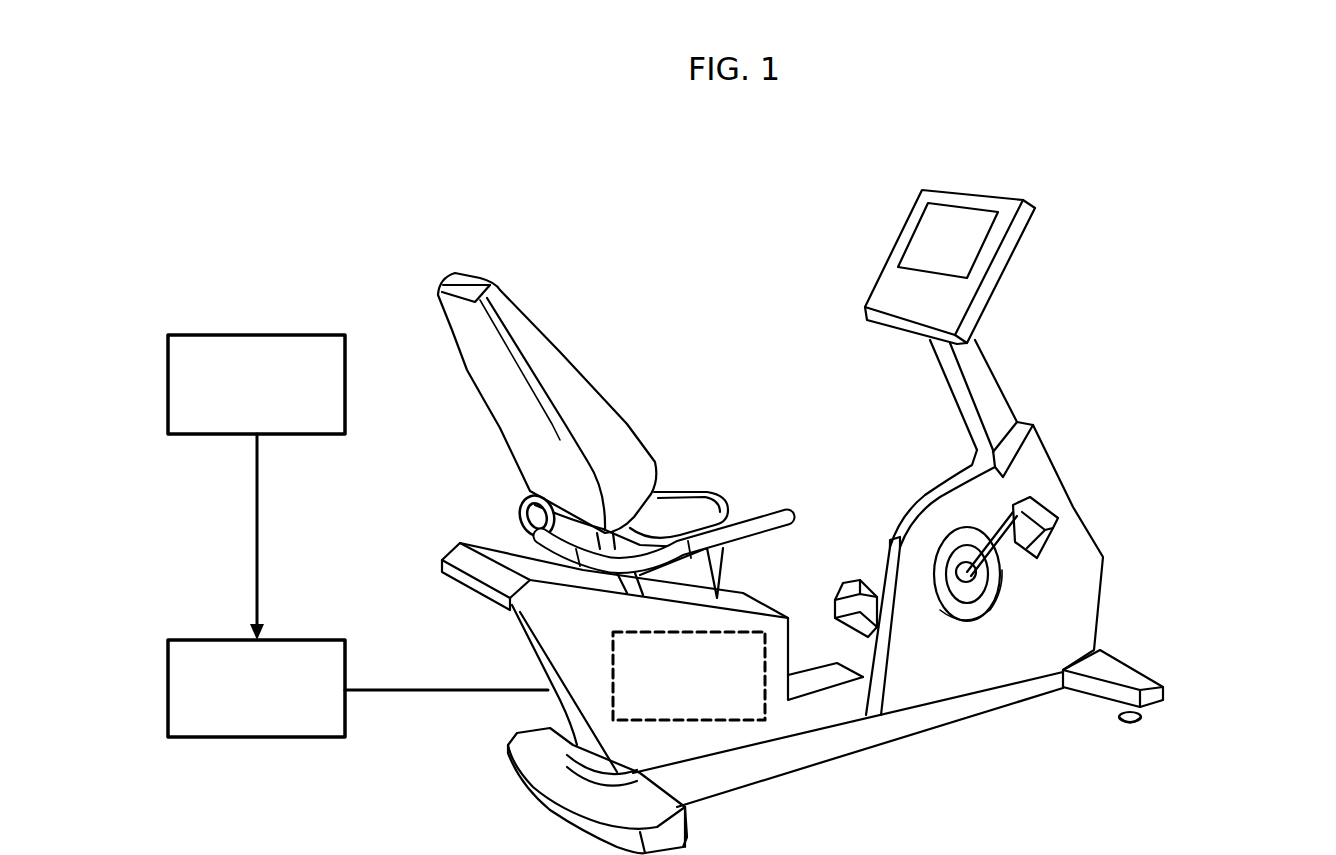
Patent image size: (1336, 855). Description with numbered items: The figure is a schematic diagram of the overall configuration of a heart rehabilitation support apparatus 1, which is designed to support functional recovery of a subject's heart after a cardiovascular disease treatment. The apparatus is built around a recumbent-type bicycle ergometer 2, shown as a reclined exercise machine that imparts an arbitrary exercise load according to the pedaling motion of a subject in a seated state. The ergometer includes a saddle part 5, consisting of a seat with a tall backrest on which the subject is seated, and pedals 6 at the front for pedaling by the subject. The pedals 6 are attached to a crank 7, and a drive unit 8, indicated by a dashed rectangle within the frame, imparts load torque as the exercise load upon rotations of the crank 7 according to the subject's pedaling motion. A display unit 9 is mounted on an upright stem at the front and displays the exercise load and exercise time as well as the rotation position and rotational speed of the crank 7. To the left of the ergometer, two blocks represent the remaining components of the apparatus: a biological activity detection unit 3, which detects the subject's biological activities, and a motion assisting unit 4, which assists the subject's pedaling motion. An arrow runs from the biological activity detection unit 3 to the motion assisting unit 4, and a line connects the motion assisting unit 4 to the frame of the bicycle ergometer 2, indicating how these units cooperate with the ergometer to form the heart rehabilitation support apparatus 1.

The heart rehabilitation support apparatus 1 is at (917, 145).
The bicycle ergometer 2 is at (549, 282).
The biological activity detection unit 3 is at (221, 336).
The motion assisting unit 4 is at (226, 641).
The saddle part 5 is at (704, 492).
The pedals 6 is at (836, 615).
The crank 7 is at (1097, 598).
The drive unit 8 is at (735, 722).
The display unit 9 is at (910, 224).